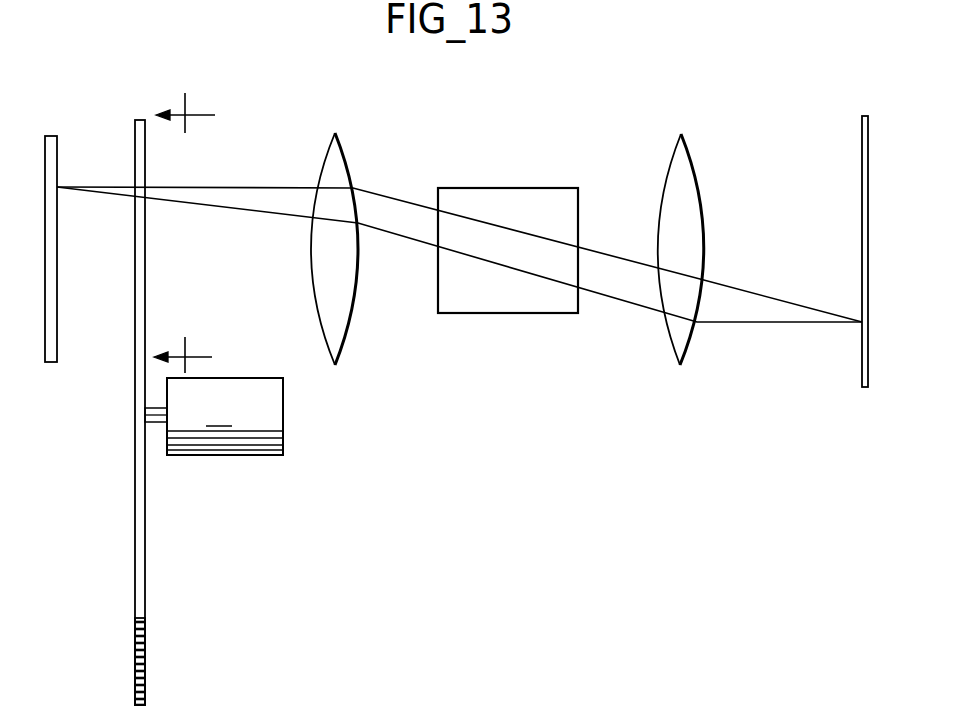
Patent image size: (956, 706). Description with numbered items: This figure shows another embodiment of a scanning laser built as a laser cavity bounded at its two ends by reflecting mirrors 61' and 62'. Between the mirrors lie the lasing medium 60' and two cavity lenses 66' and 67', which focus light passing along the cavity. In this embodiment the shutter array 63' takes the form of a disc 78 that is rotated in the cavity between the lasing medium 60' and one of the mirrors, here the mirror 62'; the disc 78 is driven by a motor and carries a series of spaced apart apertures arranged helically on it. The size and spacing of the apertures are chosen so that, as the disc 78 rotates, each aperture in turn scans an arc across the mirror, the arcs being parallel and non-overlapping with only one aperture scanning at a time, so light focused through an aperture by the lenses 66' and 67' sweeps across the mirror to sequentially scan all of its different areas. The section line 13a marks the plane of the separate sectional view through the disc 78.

The section line 13a is at (206, 221).
The reflecting mirror 62' is at (45, 283).
The shutter array 63' is at (213, 413).
The disc 78 is at (145, 615).
The lens 67' is at (338, 298).
The lasing medium 60' is at (508, 325).
The lens 66' is at (677, 302).
The reflecting mirror 61' is at (846, 293).